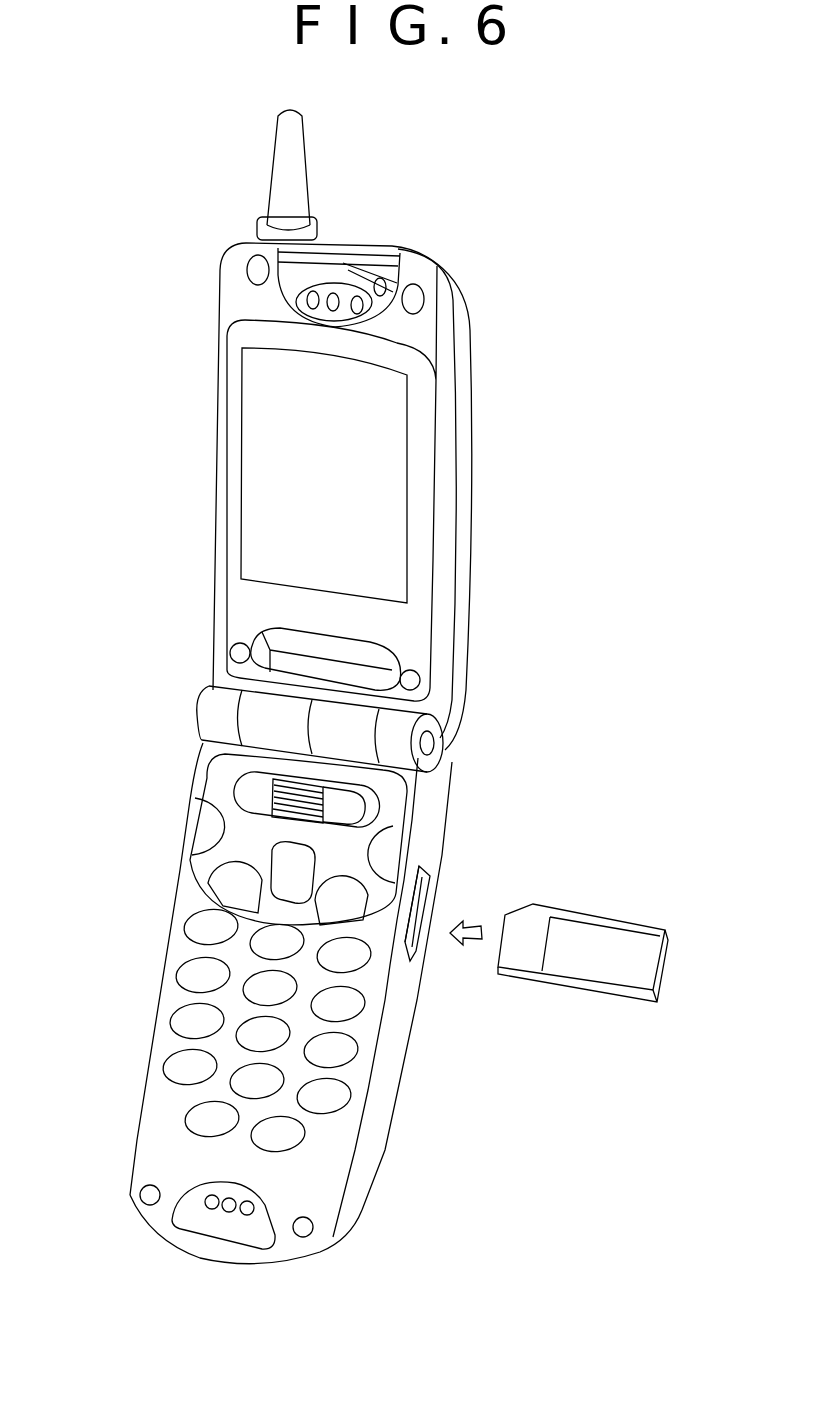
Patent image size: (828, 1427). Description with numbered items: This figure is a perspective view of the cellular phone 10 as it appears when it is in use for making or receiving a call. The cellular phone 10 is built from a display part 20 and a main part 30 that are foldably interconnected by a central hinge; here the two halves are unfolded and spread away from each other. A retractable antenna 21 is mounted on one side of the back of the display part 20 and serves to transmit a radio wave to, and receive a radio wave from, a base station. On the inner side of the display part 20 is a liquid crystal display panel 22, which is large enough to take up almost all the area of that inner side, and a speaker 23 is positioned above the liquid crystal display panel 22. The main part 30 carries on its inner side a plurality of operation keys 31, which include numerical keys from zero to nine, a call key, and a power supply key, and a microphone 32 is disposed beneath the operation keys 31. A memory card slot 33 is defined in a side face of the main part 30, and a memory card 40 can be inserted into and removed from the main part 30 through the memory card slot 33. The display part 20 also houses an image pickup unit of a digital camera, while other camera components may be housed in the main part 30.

The cellular phone 10 is at (573, 317).
The display part 20 is at (452, 468).
The retractable antenna 21 is at (279, 162).
The liquid crystal display panel 22 is at (258, 489).
The speaker 23 is at (327, 290).
The main part 30 is at (162, 1094).
The operation keys 31 is at (380, 838).
The microphone 32 is at (222, 1232).
The memory card slot 33 is at (417, 953).
The memory card 40 is at (620, 928).